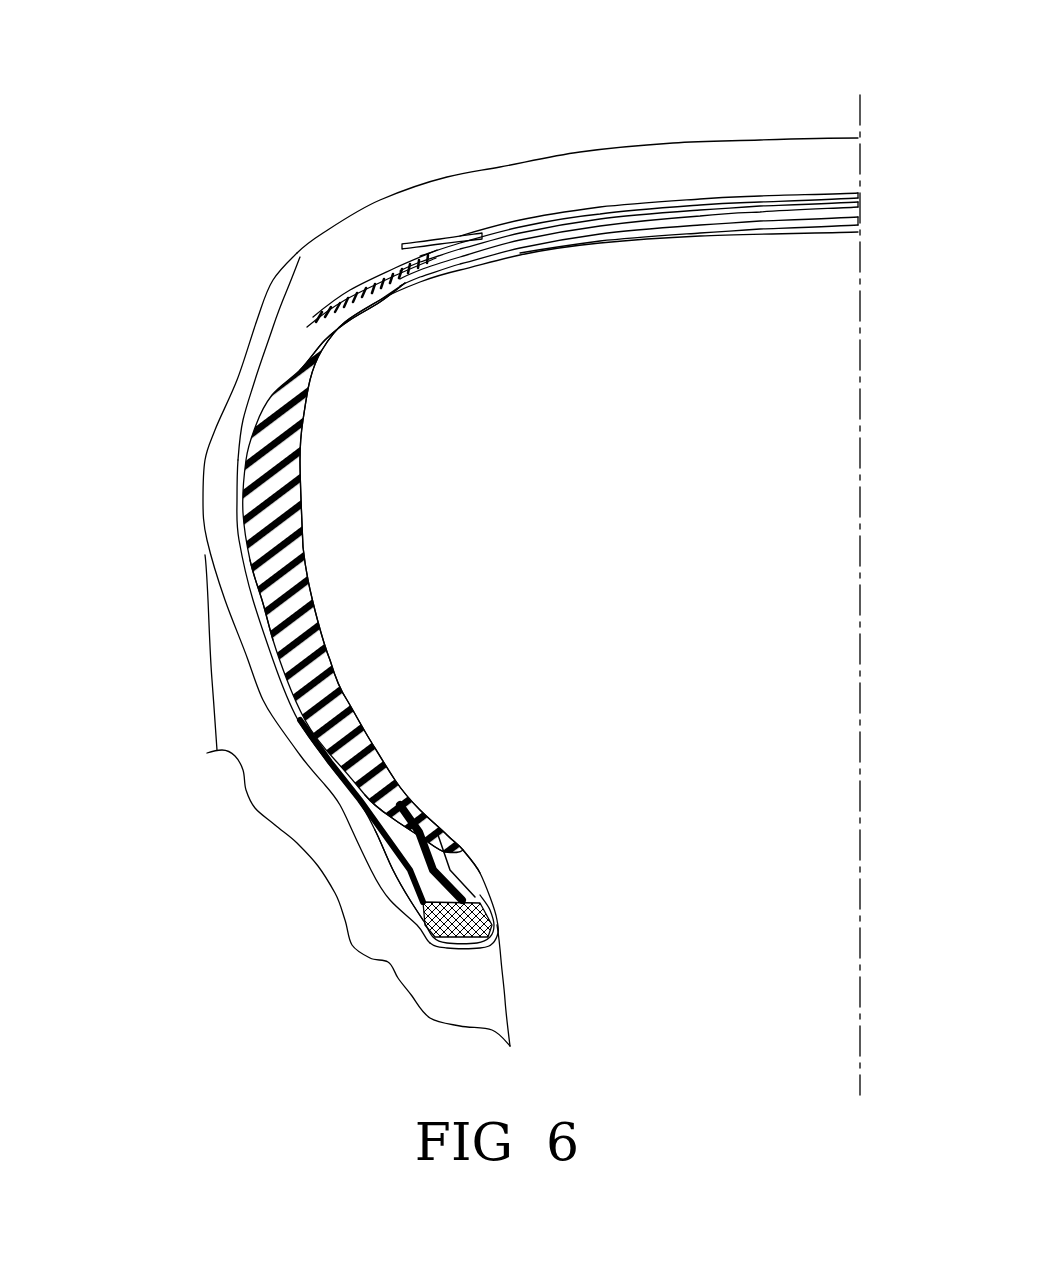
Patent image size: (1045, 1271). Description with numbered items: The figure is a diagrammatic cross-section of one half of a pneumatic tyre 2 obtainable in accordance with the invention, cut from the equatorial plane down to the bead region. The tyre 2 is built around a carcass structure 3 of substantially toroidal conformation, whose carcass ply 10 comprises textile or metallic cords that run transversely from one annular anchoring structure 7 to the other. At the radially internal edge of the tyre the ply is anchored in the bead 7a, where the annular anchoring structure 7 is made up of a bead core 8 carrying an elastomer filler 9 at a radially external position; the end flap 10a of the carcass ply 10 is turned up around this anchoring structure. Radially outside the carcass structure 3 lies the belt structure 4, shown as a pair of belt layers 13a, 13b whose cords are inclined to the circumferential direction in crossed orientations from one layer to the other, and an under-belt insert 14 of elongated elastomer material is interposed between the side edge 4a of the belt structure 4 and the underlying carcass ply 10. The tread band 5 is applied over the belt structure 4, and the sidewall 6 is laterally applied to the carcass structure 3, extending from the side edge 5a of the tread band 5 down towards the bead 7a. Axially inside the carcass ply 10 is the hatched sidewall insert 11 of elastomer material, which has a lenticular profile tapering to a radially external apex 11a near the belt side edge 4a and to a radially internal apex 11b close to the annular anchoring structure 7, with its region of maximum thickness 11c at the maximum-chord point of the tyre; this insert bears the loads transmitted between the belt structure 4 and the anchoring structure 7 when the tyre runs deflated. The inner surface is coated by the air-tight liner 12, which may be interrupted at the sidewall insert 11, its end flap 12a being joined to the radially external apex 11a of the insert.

The tyre 2 is at (160, 625).
The carcass structure 3 is at (383, 768).
The belt structure 4 is at (629, 143).
The side edge of the belt structure 4a is at (330, 283).
The tread band 5 is at (678, 165).
The side edge of the tread band 5a is at (287, 333).
The sidewall 6 is at (210, 465).
The annular anchoring structure 7 is at (407, 819).
The bead 7a is at (493, 872).
The bead core 8 is at (490, 918).
The elastomer filler 9 is at (410, 835).
The carcass ply 10 is at (300, 707).
The end flap of the carcass ply 10a is at (410, 880).
The sidewall insert 11 is at (300, 650).
The radially external apex of the sidewall insert 11a is at (310, 355).
The radially internal apex of the sidewall insert 11b is at (400, 787).
The region of maximum thickness of the sidewall insert 11c is at (290, 580).
The liner 12 is at (715, 235).
The end flap of the liner 12a is at (390, 300).
The belt layer 13a is at (522, 218).
The belt layer 13b is at (592, 223).
The under-belt insert 14 is at (348, 280).